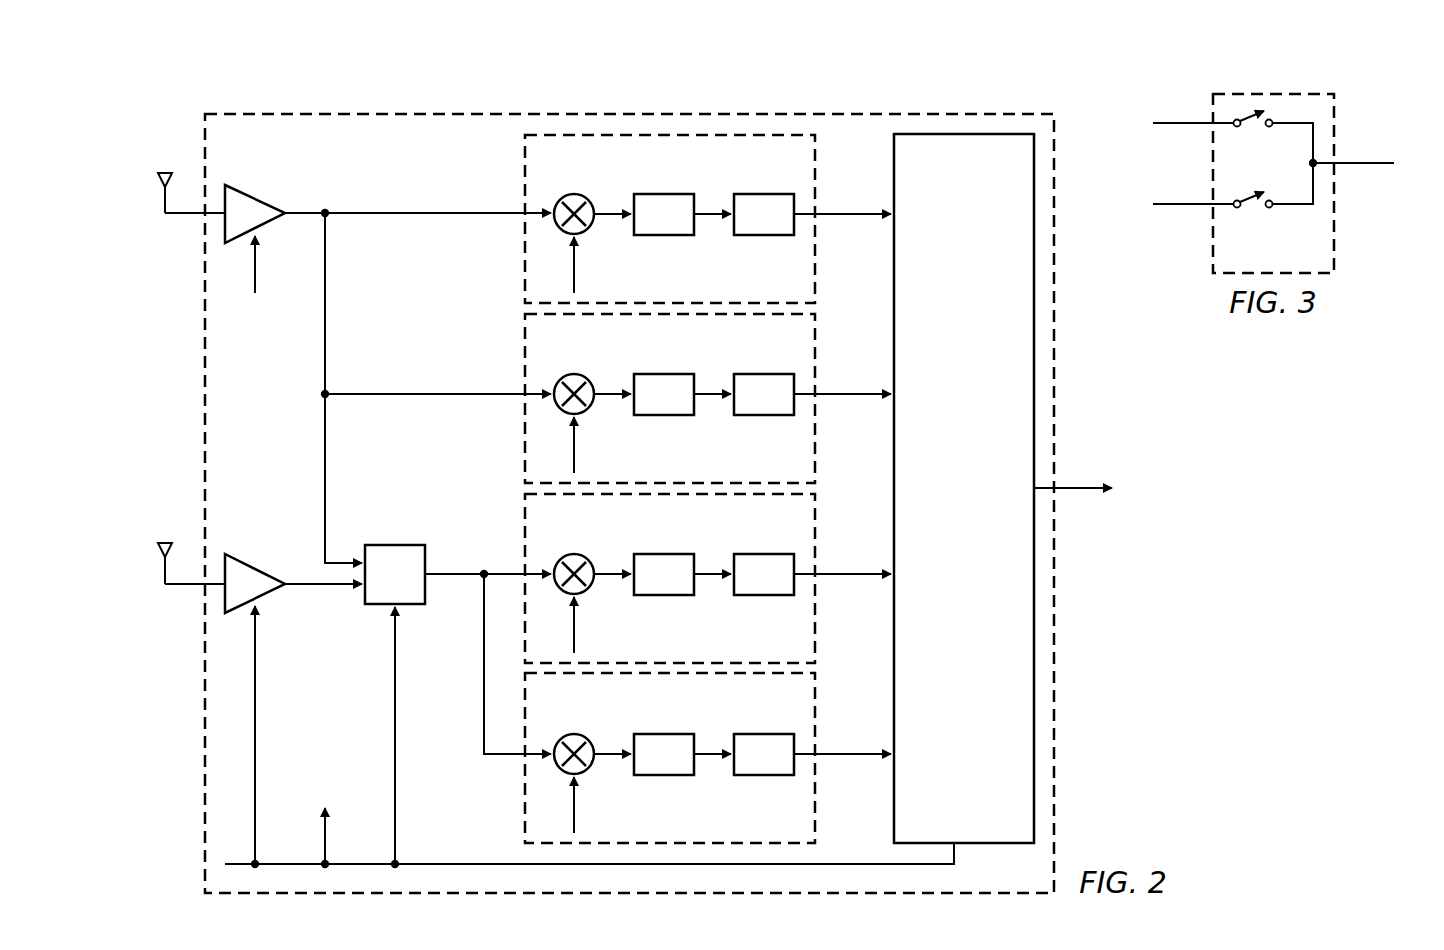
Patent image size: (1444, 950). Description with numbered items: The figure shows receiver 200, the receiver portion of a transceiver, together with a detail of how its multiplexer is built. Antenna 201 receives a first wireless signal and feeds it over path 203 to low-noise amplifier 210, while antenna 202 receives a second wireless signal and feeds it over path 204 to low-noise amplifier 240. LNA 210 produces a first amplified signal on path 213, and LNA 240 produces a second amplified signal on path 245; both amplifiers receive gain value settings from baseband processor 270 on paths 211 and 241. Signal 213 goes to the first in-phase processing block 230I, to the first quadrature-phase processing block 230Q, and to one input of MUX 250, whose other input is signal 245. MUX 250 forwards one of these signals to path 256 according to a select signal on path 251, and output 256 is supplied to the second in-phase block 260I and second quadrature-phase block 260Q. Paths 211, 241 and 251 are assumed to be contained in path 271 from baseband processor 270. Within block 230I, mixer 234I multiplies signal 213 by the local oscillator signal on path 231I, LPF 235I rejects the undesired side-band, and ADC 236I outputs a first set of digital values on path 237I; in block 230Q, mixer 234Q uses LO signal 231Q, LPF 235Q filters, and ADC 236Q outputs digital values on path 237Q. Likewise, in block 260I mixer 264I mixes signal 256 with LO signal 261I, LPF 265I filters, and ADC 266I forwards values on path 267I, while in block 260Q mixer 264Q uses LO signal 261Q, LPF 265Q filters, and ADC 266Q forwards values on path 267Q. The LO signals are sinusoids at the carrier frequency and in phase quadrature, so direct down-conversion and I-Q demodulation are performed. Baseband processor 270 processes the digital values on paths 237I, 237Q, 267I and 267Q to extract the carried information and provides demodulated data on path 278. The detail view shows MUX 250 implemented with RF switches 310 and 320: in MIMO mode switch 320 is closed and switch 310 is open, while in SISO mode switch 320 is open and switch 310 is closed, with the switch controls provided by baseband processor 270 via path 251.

In FIG. 2, the receiver 200 is at (1062, 684).
In FIG. 2, the antenna 201 is at (165, 173).
In FIG. 2, the antenna 202 is at (165, 543).
In FIG. 2, the path 203 is at (190, 213).
In FIG. 2, the path 204 is at (190, 584).
In FIG. 2, the low-noise amplifier 210 is at (255, 196).
In FIG. 2, the path 211 is at (255, 262).
In FIG. 2, the path 213 is at (305, 213).
In FIG. 3, the path 213 is at (1183, 123).
In FIG. 2, the signal processing block 230I is at (522, 172).
In FIG. 2, the signal processing block 230Q is at (522, 352).
In FIG. 2, the path 231I is at (574, 264).
In FIG. 2, the path 231Q is at (574, 444).
In FIG. 2, the mixer 234I is at (572, 194).
In FIG. 2, the mixer 234Q is at (572, 374).
In FIG. 2, the low-pass filter 235I is at (663, 194).
In FIG. 2, the low-pass filter 235Q is at (663, 374).
In FIG. 2, the analog-to-digital converter 236I is at (763, 194).
In FIG. 2, the analog-to-digital converter 236Q is at (763, 374).
In FIG. 2, the path 237I is at (848, 214).
In FIG. 2, the path 237Q is at (848, 394).
In FIG. 2, the low-noise amplifier 240 is at (260, 566).
In FIG. 2, the path 241 is at (255, 722).
In FIG. 2, the path 245 is at (323, 584).
In FIG. 3, the path 245 is at (1183, 204).
In FIG. 2, the multiplexer 250 is at (395, 545).
In FIG. 3, the multiplexer 250 is at (1309, 183).
In FIG. 2, the path 251 is at (395, 722).
In FIG. 2, the path 256 is at (466, 574).
In FIG. 3, the path 256 is at (1365, 163).
In FIG. 2, the signal processing block 260I is at (522, 532).
In FIG. 2, the signal processing block 260Q is at (522, 805).
In FIG. 2, the path 261I is at (574, 624).
In FIG. 2, the path 261Q is at (574, 804).
In FIG. 2, the mixer 264I is at (572, 554).
In FIG. 2, the mixer 264Q is at (572, 734).
In FIG. 2, the low-pass filter 265I is at (663, 554).
In FIG. 2, the low-pass filter 265Q is at (663, 734).
In FIG. 2, the analog-to-digital converter 266I is at (764, 595).
In FIG. 2, the analog-to-digital converter 266Q is at (764, 775).
In FIG. 2, the path 267I is at (848, 574).
In FIG. 2, the path 267Q is at (848, 754).
In FIG. 2, the baseband processor 270 is at (948, 526).
In FIG. 2, the path 271 is at (848, 864).
In FIG. 2, the path 278 is at (1084, 488).
In FIG. 3, the switch 310 is at (1253, 130).
In FIG. 3, the switch 320 is at (1255, 211).